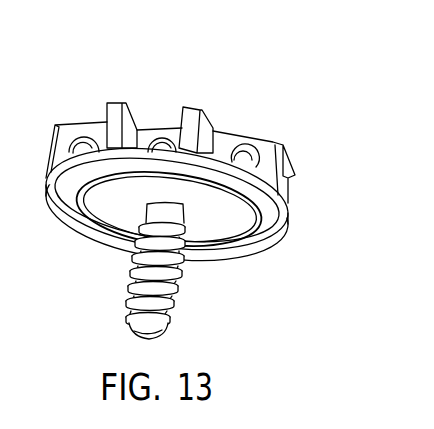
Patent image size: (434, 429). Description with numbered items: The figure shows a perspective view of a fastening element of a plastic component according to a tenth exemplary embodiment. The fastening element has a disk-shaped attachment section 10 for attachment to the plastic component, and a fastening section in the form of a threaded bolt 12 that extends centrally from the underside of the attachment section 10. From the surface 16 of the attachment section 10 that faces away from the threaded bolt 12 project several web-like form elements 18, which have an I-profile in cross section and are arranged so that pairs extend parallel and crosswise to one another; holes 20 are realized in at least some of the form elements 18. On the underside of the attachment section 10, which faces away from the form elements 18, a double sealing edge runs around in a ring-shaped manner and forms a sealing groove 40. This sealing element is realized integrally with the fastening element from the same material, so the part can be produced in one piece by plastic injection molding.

The attachment section 10 is at (120, 212).
The threaded bolt 12 is at (172, 298).
The surface 16 is at (153, 132).
The form elements 18 is at (190, 116).
The holes 20 is at (250, 160).
The sealing groove 40 is at (250, 233).